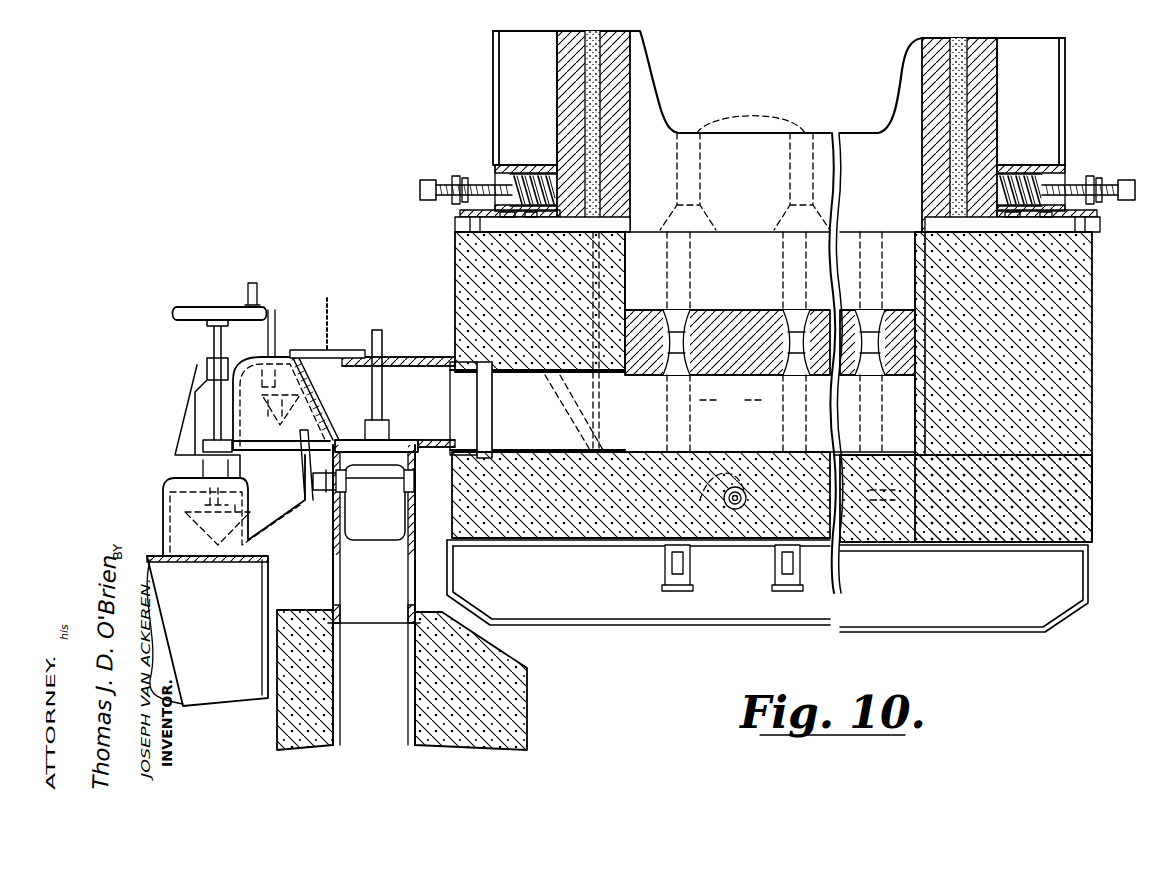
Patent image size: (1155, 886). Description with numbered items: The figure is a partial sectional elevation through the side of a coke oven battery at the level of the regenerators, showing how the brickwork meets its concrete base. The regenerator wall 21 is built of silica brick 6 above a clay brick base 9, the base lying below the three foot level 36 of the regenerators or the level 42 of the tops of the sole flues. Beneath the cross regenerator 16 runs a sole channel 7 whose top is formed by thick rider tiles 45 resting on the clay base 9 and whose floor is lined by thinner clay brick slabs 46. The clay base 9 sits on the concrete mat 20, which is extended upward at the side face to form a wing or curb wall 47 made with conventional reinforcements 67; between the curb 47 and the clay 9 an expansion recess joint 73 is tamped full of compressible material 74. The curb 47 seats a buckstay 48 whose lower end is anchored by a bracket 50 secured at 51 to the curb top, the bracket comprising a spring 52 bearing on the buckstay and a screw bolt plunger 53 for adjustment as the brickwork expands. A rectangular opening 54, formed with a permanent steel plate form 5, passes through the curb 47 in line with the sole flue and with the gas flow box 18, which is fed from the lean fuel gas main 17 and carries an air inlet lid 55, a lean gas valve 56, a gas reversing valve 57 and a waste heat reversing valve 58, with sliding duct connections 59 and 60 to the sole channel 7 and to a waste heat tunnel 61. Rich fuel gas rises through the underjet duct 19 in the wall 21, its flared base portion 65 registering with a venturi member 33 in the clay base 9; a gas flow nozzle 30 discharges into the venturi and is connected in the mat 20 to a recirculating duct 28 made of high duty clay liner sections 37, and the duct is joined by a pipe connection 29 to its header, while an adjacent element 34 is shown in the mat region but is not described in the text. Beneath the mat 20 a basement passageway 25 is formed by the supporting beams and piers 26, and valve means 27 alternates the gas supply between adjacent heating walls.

The permanent steel plate forms 5 is at (542, 448).
The silica brick 6 is at (625, 50).
The sole channel 7 is at (863, 420).
The clay brick base 9 is at (916, 418).
The cross regenerator 16 is at (775, 195).
The lean fuel gas main 17 is at (210, 606).
The gas flow box 18 is at (308, 400).
The duct 19 is at (722, 115).
The concrete mat 20 is at (458, 490).
The regenerator wall 21 is at (668, 178).
The basement passageway 25 is at (735, 670).
The battery supporting beams and piers 26 is at (892, 610).
The valve means 27 is at (665, 556).
The recirculating duct 28 is at (720, 505).
The pipe connection 29 is at (738, 510).
The gas flow nozzle 30 is at (848, 497).
The venturi member 33 is at (672, 455).
The duct 34 is at (848, 518).
The three foot level 36 is at (865, 232).
The high duty clay liner sections 37 is at (727, 378).
The level of the tops of the sole flues 42 is at (848, 312).
The rider tiles 45 is at (892, 378).
The clay brick slabs 46 is at (860, 458).
The wing or curb wall 47 is at (455, 260).
The buckstay 48 is at (500, 62).
The bracket 50 is at (470, 212).
The securing point 51 is at (515, 250).
The spring 52 is at (540, 175).
The screw bolt plunger 53 is at (520, 180).
The rectangular opening 54 is at (557, 418).
The air inlet lid 55 is at (312, 350).
The lean gas valve 56 is at (165, 503).
The gas reversing valve 57 is at (290, 422).
The waste heat reversing valve 58 is at (405, 440).
The sliding duct connection 59 is at (452, 452).
The sliding duct connection 60 is at (332, 608).
The waste heat tunnel 61 is at (388, 728).
The base portion of riser 65 is at (705, 215).
The reinforcements 67 is at (590, 480).
The expansion recess joint 73 is at (626, 246).
The compressible material 74 is at (668, 278).